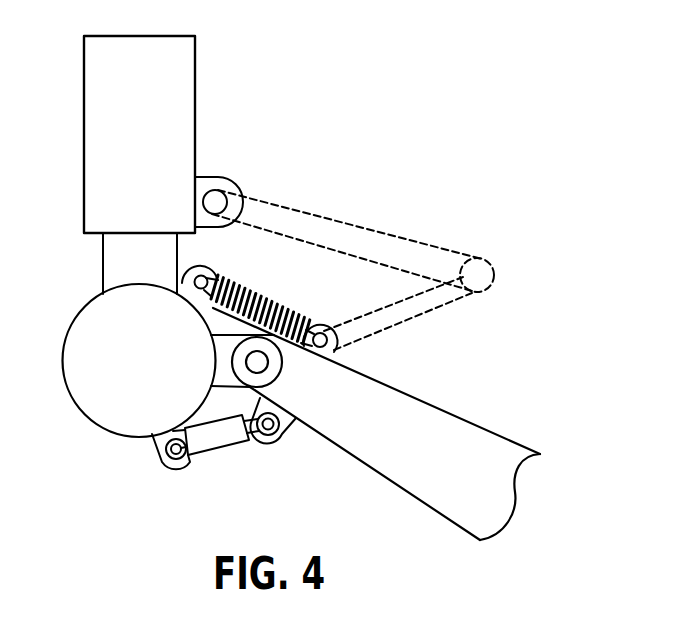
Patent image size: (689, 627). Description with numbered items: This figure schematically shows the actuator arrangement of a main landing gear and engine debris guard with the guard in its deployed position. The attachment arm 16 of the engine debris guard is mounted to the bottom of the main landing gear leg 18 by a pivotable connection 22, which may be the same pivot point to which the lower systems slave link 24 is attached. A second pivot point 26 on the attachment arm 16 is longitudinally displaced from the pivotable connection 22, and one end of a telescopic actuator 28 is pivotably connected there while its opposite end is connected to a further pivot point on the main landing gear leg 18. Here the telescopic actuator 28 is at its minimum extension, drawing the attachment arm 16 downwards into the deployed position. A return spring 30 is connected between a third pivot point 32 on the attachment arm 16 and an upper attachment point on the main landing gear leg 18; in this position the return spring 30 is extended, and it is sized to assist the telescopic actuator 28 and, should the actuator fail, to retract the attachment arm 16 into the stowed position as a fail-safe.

The attachment arm 16 is at (508, 505).
The main landing gear leg 18 is at (195, 118).
The pivotable connection 22 is at (262, 358).
The lower systems slave link 24 is at (447, 303).
The second pivot point 26 is at (273, 442).
The telescopic actuator 28 is at (222, 445).
The return spring 30 is at (277, 300).
The third pivot point 32 is at (338, 348).